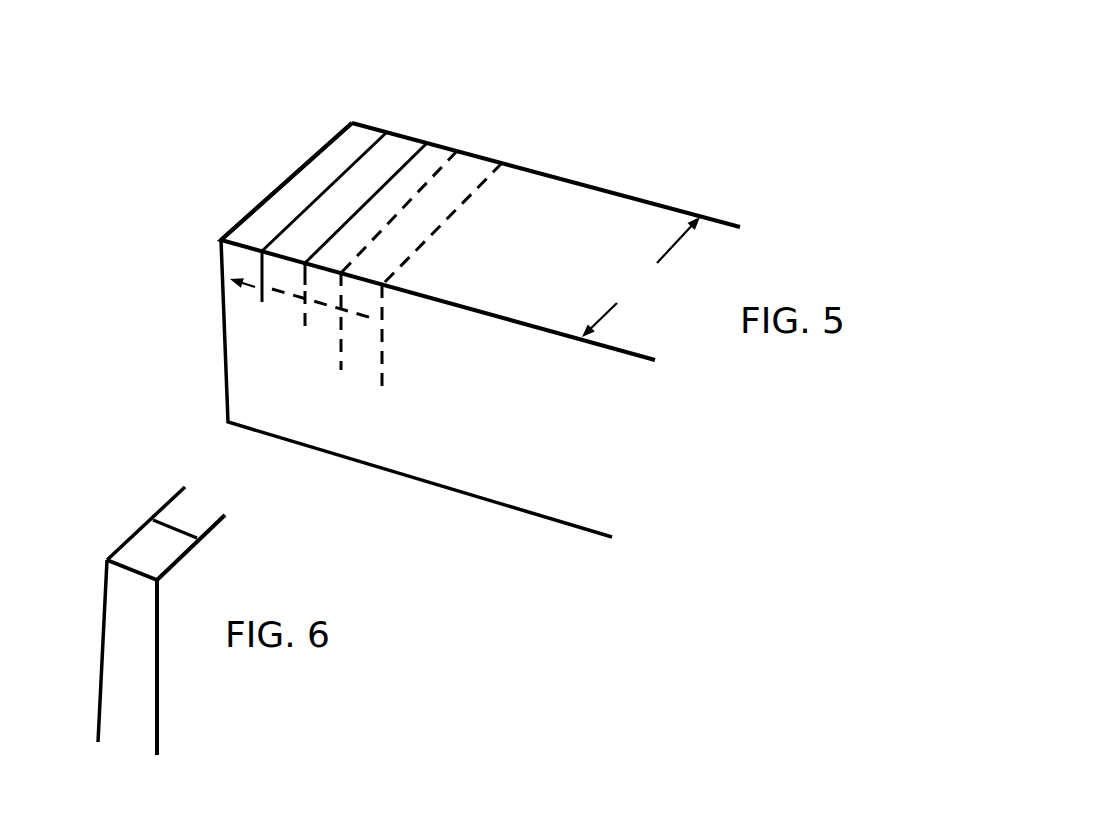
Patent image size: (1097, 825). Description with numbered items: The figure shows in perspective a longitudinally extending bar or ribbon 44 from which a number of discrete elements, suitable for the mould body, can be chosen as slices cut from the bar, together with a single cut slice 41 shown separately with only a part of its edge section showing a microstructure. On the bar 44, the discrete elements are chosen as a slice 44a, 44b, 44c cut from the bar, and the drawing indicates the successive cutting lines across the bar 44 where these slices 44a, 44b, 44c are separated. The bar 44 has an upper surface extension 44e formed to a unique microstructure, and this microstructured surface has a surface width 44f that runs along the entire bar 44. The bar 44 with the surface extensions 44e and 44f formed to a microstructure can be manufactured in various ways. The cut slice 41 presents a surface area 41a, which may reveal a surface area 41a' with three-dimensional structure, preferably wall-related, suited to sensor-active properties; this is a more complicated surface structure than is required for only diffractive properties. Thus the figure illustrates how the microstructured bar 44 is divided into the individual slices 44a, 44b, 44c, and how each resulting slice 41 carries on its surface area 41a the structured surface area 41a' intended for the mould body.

In FIG. 5, the electrode element 41 is at (385, 116).
In FIG. 5, the surface area 41a is at (233, 219).
In FIG. 6, the surface area 41a is at (156, 590).
In FIG. 6, the surface area with 3D structure 41a' is at (122, 527).
In FIG. 5, the longitudinally extending bar 44 is at (576, 173).
In FIG. 5, the slice 44a is at (240, 227).
In FIG. 5, the slice 44b is at (412, 134).
In FIG. 5, the slice 44c is at (450, 150).
In FIG. 5, the upper surface extension 44e is at (620, 390).
In FIG. 5, the surface width 44f is at (641, 277).